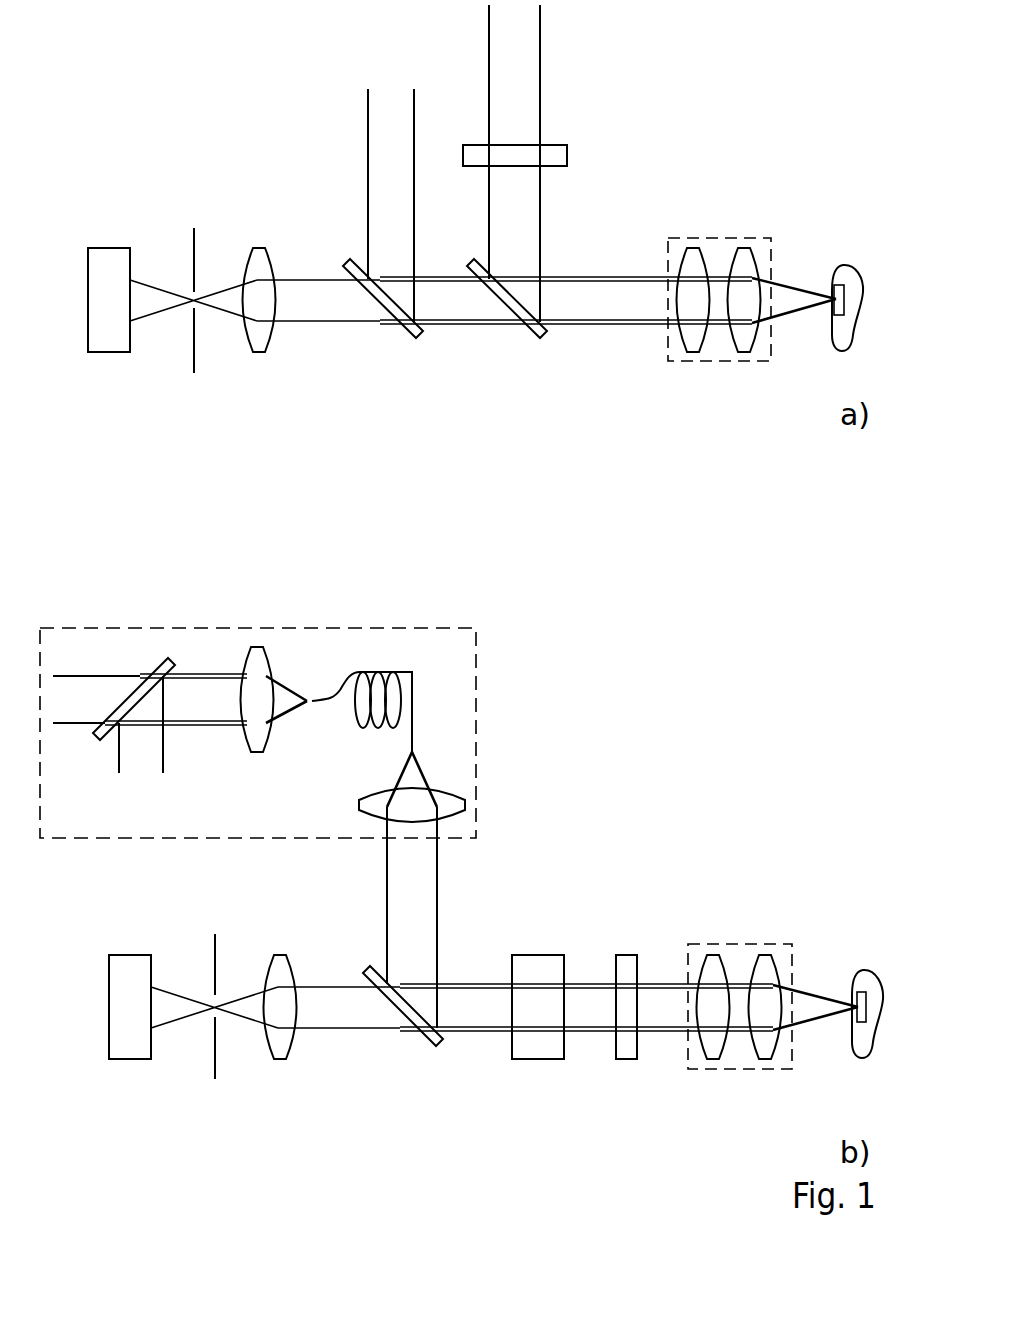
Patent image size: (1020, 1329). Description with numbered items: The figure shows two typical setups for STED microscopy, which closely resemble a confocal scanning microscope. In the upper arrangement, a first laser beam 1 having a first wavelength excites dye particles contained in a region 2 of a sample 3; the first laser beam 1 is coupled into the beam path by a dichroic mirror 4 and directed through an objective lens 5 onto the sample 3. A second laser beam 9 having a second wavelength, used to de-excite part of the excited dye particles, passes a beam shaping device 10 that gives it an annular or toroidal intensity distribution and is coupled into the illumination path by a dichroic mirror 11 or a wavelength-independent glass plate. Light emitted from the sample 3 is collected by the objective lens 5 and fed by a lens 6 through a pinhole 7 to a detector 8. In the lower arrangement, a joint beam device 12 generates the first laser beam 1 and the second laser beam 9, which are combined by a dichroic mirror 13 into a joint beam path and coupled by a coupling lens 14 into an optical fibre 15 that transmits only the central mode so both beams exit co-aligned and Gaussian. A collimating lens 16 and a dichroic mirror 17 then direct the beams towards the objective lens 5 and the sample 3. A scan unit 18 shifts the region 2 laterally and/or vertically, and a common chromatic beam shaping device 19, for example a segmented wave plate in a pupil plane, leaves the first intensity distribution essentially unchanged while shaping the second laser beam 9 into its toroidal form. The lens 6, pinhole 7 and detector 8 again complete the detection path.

The first laser beam 1 is at (378, 128).
The region 2 is at (838, 285).
The sample 3 is at (847, 268).
The dichroic mirror 4 is at (415, 337).
The objective lens 5 is at (690, 235).
The lens 6 is at (260, 250).
The pinhole 7 is at (195, 226).
The detector 8 is at (112, 248).
The second laser beam 9 is at (527, 39).
The beam shaping device 10 is at (563, 152).
The dichroic mirror 11 is at (540, 337).
The joint beam device 12 is at (476, 700).
The dichroic mirror 13 is at (165, 660).
The coupling lens 14 is at (260, 653).
The optical fibre 15 is at (390, 670).
The collimating lens 16 is at (457, 803).
The dichroic mirror 17 is at (433, 1047).
The scan unit 18 is at (539, 957).
The chromatic beam shaping device 19 is at (624, 957).